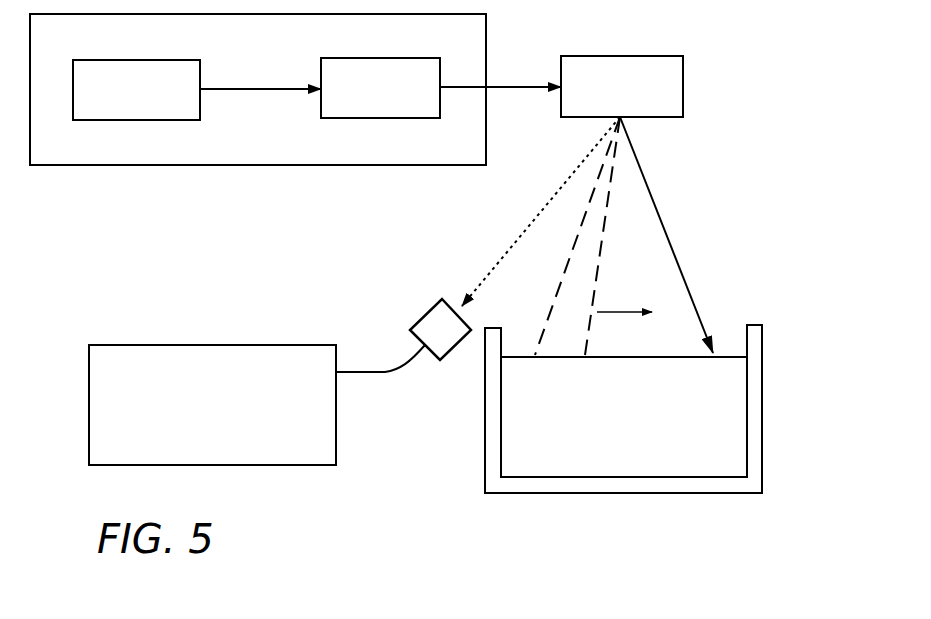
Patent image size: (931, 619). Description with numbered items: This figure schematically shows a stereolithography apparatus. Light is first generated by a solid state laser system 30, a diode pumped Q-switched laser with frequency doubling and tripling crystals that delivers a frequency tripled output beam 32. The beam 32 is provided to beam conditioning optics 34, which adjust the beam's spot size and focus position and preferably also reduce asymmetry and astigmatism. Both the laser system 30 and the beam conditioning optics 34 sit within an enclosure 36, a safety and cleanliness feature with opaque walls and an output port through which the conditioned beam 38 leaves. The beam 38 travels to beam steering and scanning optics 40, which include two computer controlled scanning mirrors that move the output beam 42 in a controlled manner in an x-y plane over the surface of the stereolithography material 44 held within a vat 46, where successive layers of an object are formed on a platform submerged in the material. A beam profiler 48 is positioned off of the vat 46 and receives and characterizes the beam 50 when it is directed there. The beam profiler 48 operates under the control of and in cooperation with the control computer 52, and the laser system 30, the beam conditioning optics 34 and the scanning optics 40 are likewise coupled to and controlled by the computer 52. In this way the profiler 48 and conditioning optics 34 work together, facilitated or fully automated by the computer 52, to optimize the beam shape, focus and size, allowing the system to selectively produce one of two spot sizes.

The solid state laser system 30 is at (151, 102).
The output beam 32 is at (277, 89).
The beam conditioning optics 34 is at (394, 101).
The enclosure 36 is at (152, 165).
The output beam 38 is at (518, 87).
The beam steering and scanning optics 40 is at (635, 98).
The output beam 42 is at (680, 259).
The stereolithography material 44 is at (637, 444).
The vat 46 is at (752, 341).
The beam profiler 48 is at (432, 322).
The beam 50 is at (505, 259).
The control computer 52 is at (320, 454).